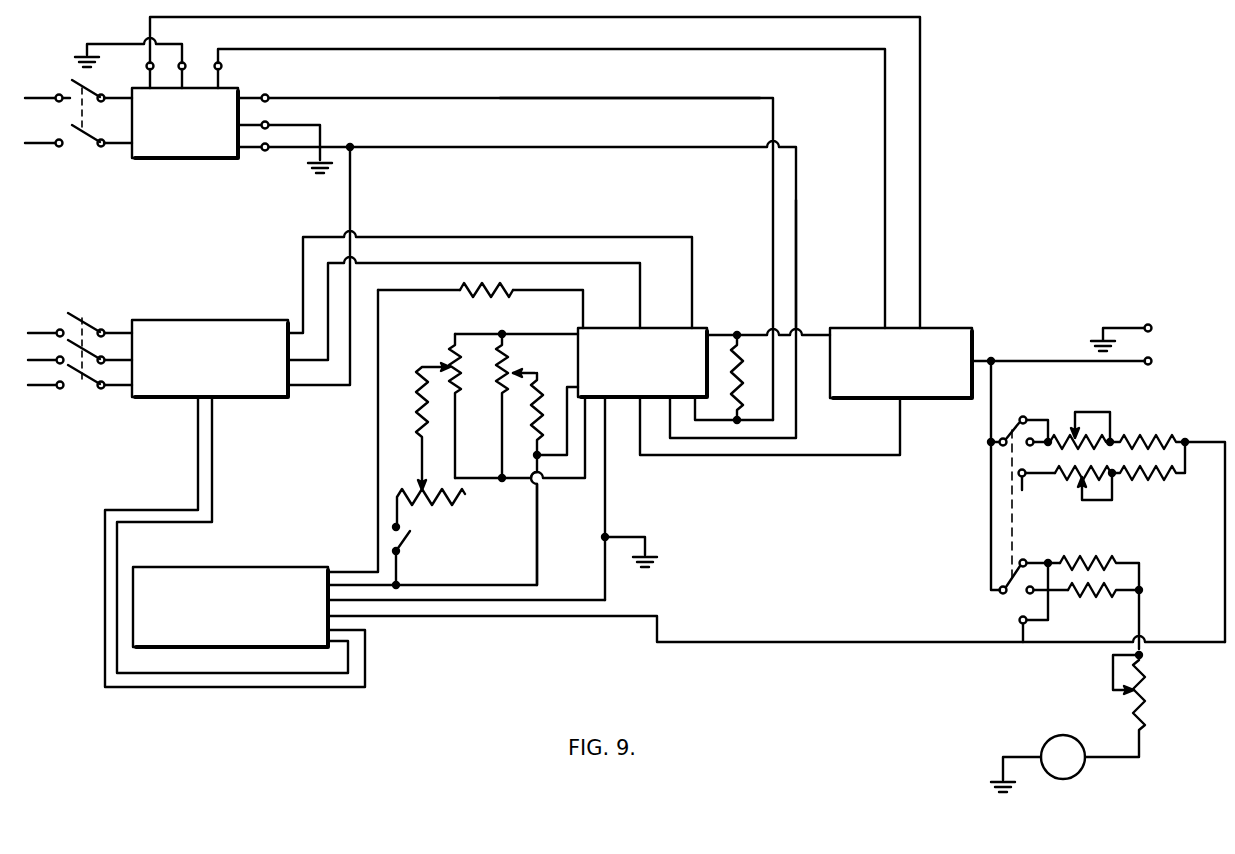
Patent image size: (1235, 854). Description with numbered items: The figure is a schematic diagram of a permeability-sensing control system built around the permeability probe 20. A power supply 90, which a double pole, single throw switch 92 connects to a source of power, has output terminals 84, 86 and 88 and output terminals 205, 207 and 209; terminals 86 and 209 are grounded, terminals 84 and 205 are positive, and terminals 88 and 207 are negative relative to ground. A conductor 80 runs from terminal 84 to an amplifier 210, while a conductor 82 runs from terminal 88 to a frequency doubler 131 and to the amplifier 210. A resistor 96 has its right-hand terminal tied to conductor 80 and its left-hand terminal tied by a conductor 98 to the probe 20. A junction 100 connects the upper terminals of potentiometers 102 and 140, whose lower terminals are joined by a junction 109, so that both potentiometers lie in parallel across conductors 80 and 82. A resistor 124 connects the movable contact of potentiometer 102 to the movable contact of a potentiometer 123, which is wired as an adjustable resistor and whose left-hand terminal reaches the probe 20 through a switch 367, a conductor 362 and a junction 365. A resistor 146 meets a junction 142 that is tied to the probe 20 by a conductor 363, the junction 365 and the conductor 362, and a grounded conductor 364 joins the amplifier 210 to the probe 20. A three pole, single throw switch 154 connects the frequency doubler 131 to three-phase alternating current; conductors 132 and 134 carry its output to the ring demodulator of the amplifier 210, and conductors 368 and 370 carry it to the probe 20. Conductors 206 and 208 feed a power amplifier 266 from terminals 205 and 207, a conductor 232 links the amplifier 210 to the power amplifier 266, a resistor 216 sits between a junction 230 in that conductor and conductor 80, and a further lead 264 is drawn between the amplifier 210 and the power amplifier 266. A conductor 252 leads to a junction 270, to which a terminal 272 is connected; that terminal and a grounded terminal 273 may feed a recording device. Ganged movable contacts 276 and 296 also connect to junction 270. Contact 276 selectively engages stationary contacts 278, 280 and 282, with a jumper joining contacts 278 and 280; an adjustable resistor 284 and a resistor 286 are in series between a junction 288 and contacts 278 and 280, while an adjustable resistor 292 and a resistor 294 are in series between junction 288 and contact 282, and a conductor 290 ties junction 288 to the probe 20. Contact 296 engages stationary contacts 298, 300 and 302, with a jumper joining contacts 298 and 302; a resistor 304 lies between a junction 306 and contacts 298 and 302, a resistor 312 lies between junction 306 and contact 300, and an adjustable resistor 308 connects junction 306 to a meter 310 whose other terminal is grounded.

The permeability probe 20 is at (248, 565).
The conductor 80 is at (410, 98).
The conductor 82 is at (290, 150).
The output terminal 84 is at (268, 94).
The output terminal 86 is at (270, 121).
The output terminal 88 is at (262, 152).
The power supply 90 is at (170, 162).
The double pole, single throw switch 92 is at (90, 146).
The resistor 96 is at (500, 287).
The conductor 98 is at (376, 473).
The junction 100 is at (503, 332).
The potentiometer 102 is at (450, 345).
The junction 109 is at (502, 482).
The potentiometer 123 is at (448, 510).
The resistor 124 is at (412, 375).
The frequency doubler 131 is at (170, 402).
The conductor 132 is at (390, 272).
The conductor 134 is at (298, 315).
The potentiometer 140 is at (508, 355).
The junction 142 is at (532, 455).
The resistor 146 is at (535, 420).
The three pole, single throw switch 154 is at (85, 320).
The output terminal 205 is at (146, 66).
The conductor 206 is at (922, 225).
The output terminal 207 is at (222, 66).
The conductor 208 is at (883, 215).
The output terminal 209 is at (185, 62).
The amplifier 210 is at (603, 326).
The resistor 216 is at (733, 410).
The junction 230 is at (735, 333).
The conductor 232 is at (808, 330).
The conductor 252 is at (985, 358).
The conductor 264 is at (793, 457).
The power amplifier 266 is at (950, 322).
The junction 270 is at (996, 358).
The terminal 272 is at (1151, 358).
The grounded terminal 273 is at (1151, 325).
The movable contact 276 is at (1010, 425).
The stationary contact 278 is at (1027, 418).
The stationary contact 280 is at (1010, 455).
The stationary contact 282 is at (1037, 491).
The adjustable resistor 284 is at (1095, 417).
The resistor 286 is at (1155, 432).
The junction 288 is at (1190, 448).
The conductor 290 is at (508, 618).
The adjustable resistor 292 is at (1095, 503).
The resistor 294 is at (1160, 485).
The movable contact 296 is at (999, 592).
The stationary contact 298 is at (1026, 560).
The stationary contact 300 is at (1026, 593).
The stationary contact 302 is at (1023, 626).
The resistor 304 is at (1078, 556).
The junction 306 is at (1142, 592).
The adjustable resistor 308 is at (1145, 700).
The meter 310 is at (1062, 718).
The resistor 312 is at (1105, 598).
The conductor 362 is at (400, 583).
The conductor 363 is at (560, 532).
The conductor 364 is at (607, 505).
The junction 365 is at (396, 588).
The switch 367 is at (403, 538).
The conductor 368 is at (338, 690).
The conductor 370 is at (233, 690).